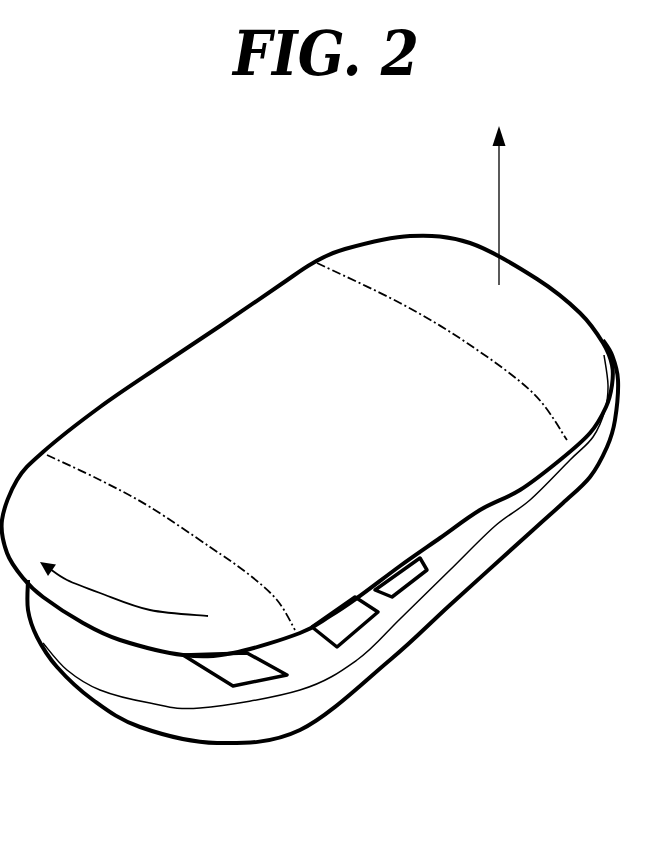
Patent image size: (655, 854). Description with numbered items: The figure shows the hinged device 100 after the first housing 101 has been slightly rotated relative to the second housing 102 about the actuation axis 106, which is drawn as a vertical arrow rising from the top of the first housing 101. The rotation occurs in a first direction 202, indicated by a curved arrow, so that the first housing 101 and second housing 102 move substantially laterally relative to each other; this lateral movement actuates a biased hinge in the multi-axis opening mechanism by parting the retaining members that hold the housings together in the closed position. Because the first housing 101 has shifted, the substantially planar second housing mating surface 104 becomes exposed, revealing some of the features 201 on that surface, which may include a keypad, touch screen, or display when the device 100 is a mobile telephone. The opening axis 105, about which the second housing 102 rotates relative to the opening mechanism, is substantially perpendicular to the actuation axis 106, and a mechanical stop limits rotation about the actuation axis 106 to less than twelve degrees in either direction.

The device 100 is at (309, 528).
The first housing 101 is at (289, 322).
The second housing 102 is at (445, 592).
The second housing mating surface 104 is at (470, 530).
The opening axis 105 is at (283, 446).
The actuation axis 106 is at (499, 155).
The features 201 is at (342, 627).
The first direction 202 is at (124, 570).